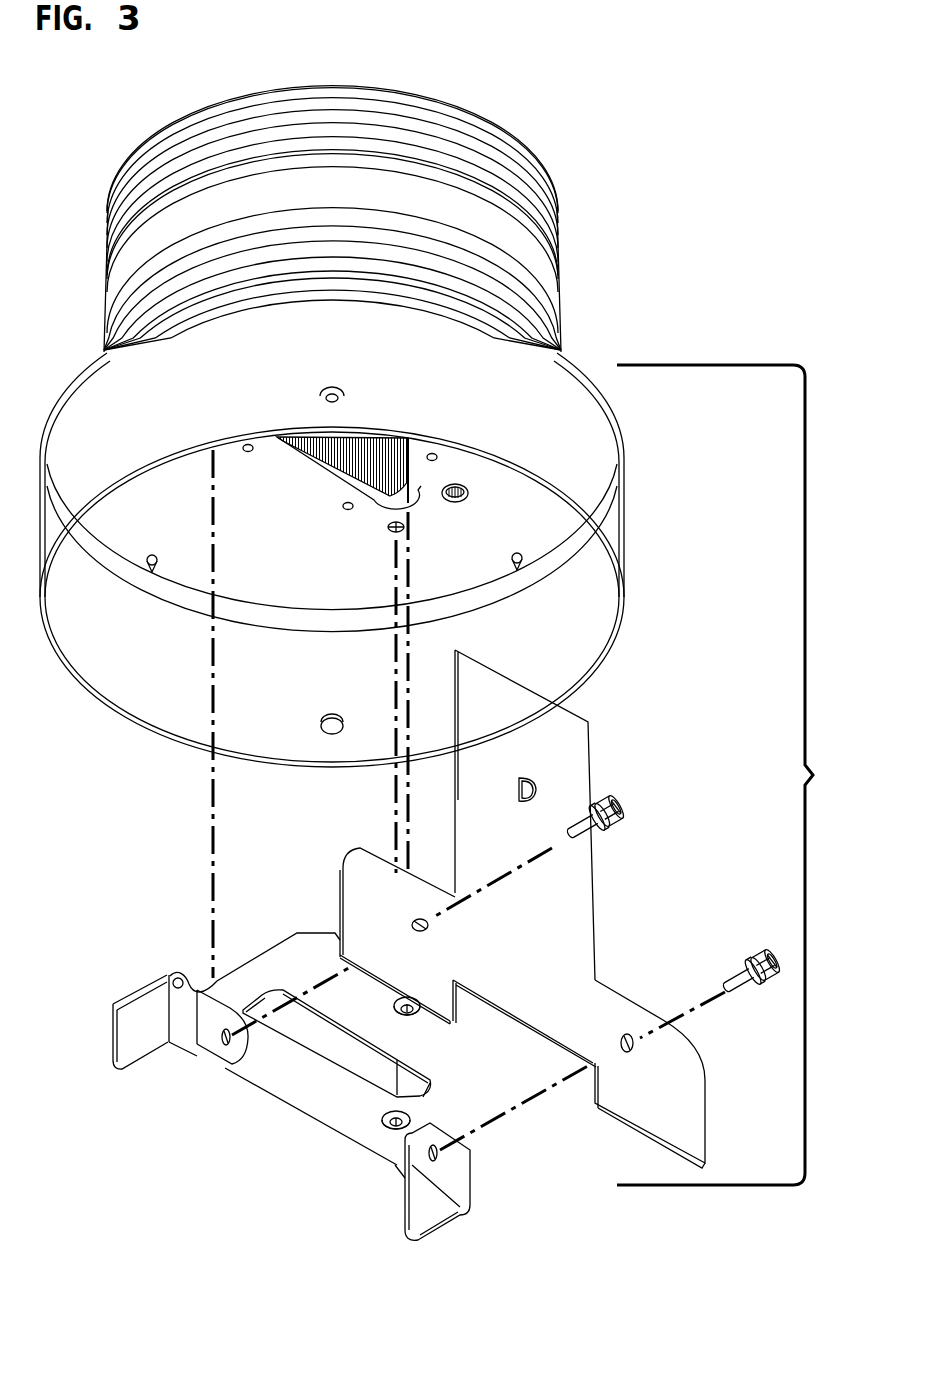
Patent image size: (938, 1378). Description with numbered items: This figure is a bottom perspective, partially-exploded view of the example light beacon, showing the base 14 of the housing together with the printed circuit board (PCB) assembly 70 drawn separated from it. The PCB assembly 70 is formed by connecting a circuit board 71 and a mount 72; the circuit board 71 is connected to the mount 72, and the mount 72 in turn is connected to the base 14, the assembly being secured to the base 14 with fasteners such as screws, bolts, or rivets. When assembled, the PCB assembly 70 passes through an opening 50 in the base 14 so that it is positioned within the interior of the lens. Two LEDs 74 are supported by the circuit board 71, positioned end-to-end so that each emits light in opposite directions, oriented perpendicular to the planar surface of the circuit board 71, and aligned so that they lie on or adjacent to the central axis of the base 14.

The base 14 is at (628, 487).
The opening 50 is at (338, 472).
The printed circuit board (PCB) assembly 70 is at (512, 775).
The circuit board 71 is at (640, 1130).
The mount 72 is at (403, 1205).
The LEDs 74 is at (535, 788).